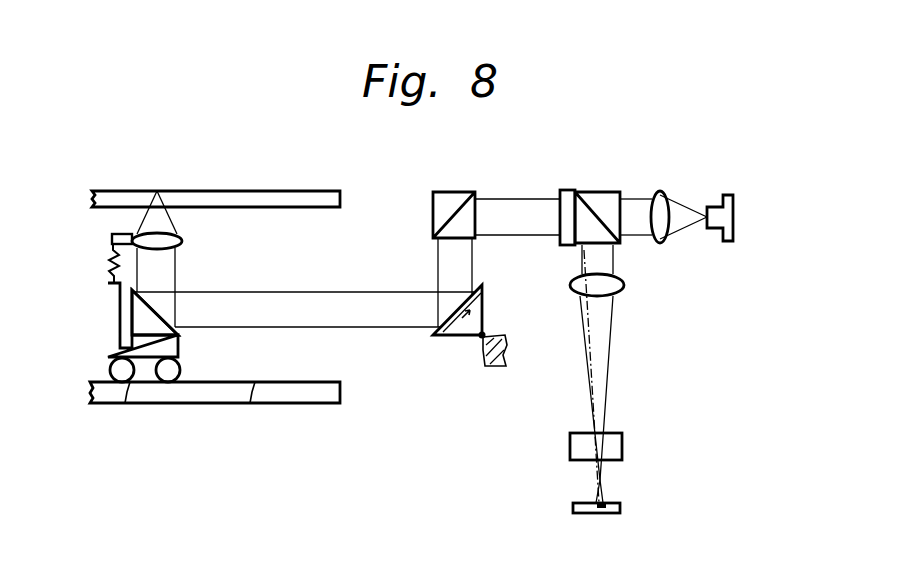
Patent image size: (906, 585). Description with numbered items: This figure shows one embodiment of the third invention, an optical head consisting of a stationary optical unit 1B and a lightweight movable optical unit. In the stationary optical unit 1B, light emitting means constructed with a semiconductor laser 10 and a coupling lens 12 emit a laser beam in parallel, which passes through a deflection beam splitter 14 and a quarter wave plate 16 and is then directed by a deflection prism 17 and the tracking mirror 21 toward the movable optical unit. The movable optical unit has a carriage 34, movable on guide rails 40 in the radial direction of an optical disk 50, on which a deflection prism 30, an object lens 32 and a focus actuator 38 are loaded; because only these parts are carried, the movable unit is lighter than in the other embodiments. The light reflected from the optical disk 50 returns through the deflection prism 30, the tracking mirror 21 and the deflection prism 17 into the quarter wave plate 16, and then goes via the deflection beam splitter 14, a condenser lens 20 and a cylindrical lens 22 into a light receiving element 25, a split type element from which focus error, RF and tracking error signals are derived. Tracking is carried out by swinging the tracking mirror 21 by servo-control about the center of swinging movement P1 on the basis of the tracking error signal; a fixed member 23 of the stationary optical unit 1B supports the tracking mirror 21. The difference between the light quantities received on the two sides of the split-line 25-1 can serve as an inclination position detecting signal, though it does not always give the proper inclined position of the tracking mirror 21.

The stationary optical unit 1B is at (672, 154).
The semiconductor laser 10 is at (735, 200).
The coupling lens 12 is at (668, 195).
The deflection beam splitter 14 is at (605, 192).
The quarter wave plate 16 is at (566, 190).
The deflection prism 17 is at (453, 192).
The condenser lens 20 is at (624, 286).
The tracking mirror 21 is at (480, 298).
The cylindrical lens 22 is at (622, 440).
The fixed member 23 is at (482, 354).
The light receiving element 25 is at (619, 503).
The split-line 25-1 is at (601, 513).
The deflection prism 30 is at (140, 317).
The object lens 32 is at (183, 241).
The carriage 34 is at (178, 346).
The focus actuator 38 is at (108, 253).
The guide rails 40 is at (290, 394).
The optical disk 50 is at (273, 193).
The center of swinging movement P1 is at (478, 339).